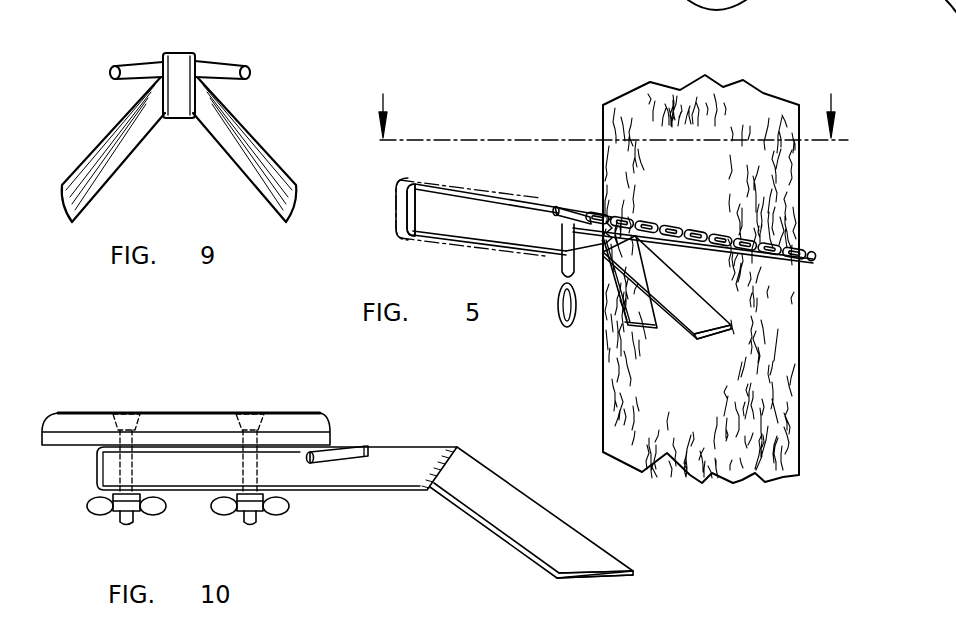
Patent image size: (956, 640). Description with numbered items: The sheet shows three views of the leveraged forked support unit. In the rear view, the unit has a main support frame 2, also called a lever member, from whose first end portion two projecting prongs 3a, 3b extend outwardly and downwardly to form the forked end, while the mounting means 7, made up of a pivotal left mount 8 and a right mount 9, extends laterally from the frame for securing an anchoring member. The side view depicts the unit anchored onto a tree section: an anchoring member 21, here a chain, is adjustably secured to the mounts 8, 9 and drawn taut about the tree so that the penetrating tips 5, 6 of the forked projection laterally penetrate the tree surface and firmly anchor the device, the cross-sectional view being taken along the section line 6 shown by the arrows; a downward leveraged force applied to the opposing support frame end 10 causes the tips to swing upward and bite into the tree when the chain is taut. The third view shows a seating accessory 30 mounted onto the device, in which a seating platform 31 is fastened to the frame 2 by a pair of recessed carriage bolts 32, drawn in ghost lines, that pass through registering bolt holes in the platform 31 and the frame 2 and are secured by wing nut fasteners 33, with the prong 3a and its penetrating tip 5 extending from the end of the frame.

In FIG. 5, the main support frame 2 is at (462, 213).
In FIG. 10, the main support frame 2 is at (393, 478).
In FIG. 9, the projecting prong 3a is at (262, 139).
In FIG. 5, the projecting prong 3a is at (686, 312).
In FIG. 10, the projecting prong 3a is at (513, 523).
In FIG. 9, the projecting prong 3b is at (100, 137).
In FIG. 5, the projecting prong 3b is at (632, 303).
In FIG. 5, the penetrating tip 5 is at (706, 341).
In FIG. 10, the penetrating tip 5 is at (575, 579).
In FIG. 5, the penetrating tip 6 is at (645, 343).
In FIG. 9, the mounting means 7 is at (108, 73).
In FIG. 9, the pivotal left mount 8 is at (136, 60).
In FIG. 9, the right mount 9 is at (222, 60).
In FIG. 5, the right mount 9 is at (558, 207).
In FIG. 10, the right mount 9 is at (328, 467).
In FIG. 9, the opposing support frame end 10 is at (178, 58).
In FIG. 5, the opposing support frame end 10 is at (407, 201).
In FIG. 5, the anchoring member 21 is at (556, 306).
In FIG. 10, the seating accessory 30 is at (340, 421).
In FIG. 10, the seating platform 31 is at (84, 412).
In FIG. 10, the recessed carriage bolt 32 is at (126, 526).
In FIG. 10, the wing nut fastener 33 is at (215, 506).